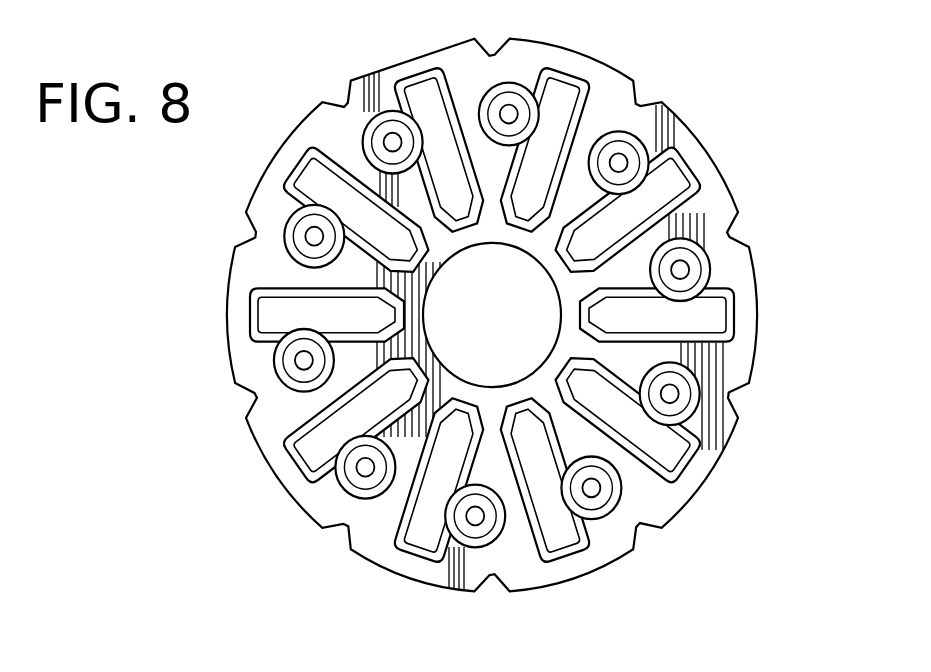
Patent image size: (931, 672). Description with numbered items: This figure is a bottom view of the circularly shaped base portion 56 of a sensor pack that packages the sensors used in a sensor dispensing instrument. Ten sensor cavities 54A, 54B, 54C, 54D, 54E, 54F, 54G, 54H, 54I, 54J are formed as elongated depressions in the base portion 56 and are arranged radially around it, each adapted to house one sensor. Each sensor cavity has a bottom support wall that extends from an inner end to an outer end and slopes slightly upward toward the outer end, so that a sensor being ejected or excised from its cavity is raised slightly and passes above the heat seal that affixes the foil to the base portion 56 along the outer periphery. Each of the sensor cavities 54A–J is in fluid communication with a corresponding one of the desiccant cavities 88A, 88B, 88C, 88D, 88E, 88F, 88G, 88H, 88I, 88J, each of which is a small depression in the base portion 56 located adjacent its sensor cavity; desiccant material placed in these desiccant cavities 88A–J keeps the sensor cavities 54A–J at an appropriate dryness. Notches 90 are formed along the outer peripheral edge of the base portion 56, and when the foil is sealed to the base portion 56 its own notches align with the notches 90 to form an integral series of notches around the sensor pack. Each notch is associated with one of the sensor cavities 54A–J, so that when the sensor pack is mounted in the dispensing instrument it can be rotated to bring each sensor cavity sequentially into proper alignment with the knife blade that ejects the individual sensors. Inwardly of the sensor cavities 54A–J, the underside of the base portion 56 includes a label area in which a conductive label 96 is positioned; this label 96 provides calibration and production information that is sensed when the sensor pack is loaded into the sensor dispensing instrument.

The base portion 56 is at (216, 319).
The sensor cavity 54A is at (568, 98).
The sensor cavity 54B is at (684, 186).
The sensor cavity 54C is at (720, 314).
The sensor cavity 54D is at (700, 462).
The sensor cavity 54E is at (596, 548).
The sensor cavity 54F is at (416, 552).
The sensor cavity 54G is at (292, 445).
The sensor cavity 54H is at (268, 306).
The sensor cavity 54I is at (311, 172).
The sensor cavity 54J is at (420, 92).
The desiccant cavity 88A is at (507, 113).
The desiccant cavity 88B is at (622, 162).
The desiccant cavity 88C is at (684, 271).
The desiccant cavity 88D is at (674, 393).
The desiccant cavity 88E is at (595, 488).
The desiccant cavity 88F is at (477, 516).
The desiccant cavity 88G is at (366, 467).
The desiccant cavity 88H is at (304, 360).
The desiccant cavity 88I is at (313, 236).
The desiccant cavity 88J is at (391, 141).
The notches 90 is at (483, 50).
The conductive label 96 is at (506, 327).